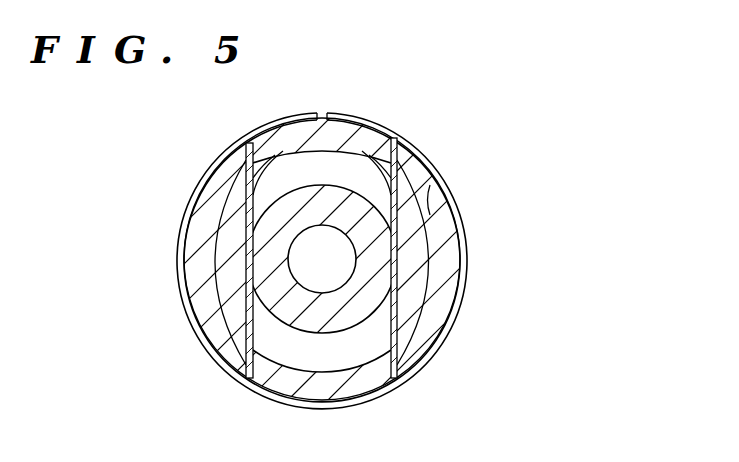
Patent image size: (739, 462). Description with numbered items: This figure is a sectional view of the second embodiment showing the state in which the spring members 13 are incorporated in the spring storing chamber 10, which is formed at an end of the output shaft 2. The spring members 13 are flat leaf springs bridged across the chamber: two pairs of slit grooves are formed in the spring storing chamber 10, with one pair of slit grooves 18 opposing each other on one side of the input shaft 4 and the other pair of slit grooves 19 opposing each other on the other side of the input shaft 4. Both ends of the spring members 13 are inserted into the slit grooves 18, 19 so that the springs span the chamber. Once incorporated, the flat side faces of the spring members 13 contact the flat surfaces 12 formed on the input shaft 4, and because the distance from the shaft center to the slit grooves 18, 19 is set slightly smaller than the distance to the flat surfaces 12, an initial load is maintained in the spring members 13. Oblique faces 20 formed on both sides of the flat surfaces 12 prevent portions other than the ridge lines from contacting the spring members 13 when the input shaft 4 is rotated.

The output shaft 2 is at (443, 218).
The input shaft 4 is at (333, 326).
The spring storing chamber 10 is at (415, 277).
The flat surface 12 is at (246, 263).
The spring member 13 is at (272, 170).
The slit groove 18 is at (250, 141).
The slit groove 19 is at (394, 138).
The oblique face 20 is at (246, 223).